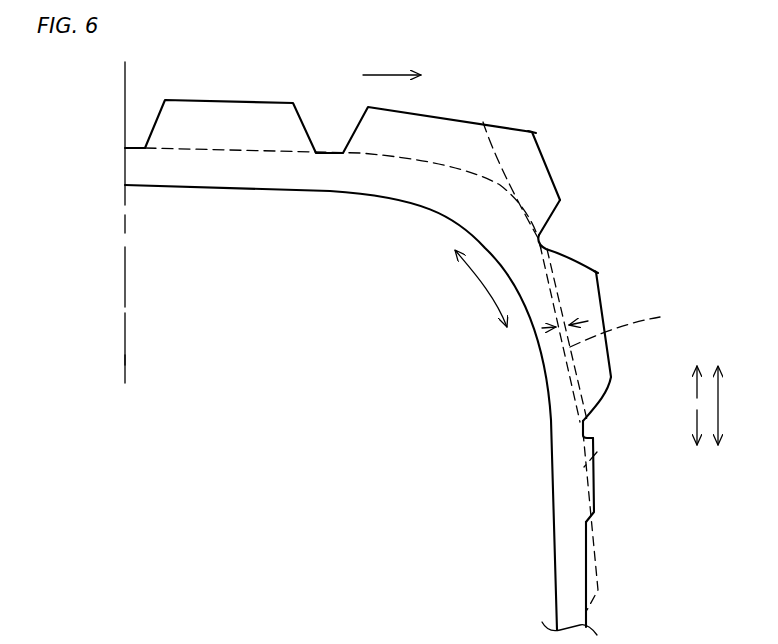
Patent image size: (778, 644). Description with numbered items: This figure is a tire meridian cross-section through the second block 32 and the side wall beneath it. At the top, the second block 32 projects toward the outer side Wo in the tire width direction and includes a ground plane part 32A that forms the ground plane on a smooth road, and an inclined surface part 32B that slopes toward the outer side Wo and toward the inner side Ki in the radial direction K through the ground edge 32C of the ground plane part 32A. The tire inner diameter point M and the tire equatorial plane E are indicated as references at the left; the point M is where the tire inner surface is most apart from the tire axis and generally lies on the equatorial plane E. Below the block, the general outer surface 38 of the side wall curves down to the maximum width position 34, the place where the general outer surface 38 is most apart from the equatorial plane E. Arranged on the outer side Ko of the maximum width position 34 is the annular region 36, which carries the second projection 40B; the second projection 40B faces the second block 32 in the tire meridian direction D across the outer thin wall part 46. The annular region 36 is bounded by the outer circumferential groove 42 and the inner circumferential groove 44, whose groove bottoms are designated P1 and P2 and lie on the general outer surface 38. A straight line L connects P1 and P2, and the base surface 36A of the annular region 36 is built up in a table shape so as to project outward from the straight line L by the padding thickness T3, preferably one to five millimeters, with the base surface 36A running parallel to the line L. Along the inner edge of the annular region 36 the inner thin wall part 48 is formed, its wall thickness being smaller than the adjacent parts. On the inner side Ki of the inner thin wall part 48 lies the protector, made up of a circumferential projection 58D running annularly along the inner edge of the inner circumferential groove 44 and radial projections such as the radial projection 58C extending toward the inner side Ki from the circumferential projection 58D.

The second block 32 is at (457, 140).
The ground plane part 32A is at (486, 120).
The inclined surface part 32B is at (549, 163).
The ground edge 32C is at (536, 129).
The maximum width position 34 is at (590, 608).
The annular region 36 is at (607, 274).
The base surface 36A is at (637, 324).
The general outer surface 38 is at (588, 561).
The second projection 40B is at (601, 303).
The outer circumferential groove 42 is at (540, 234).
The inner circumferential groove 44 is at (584, 423).
The outer thin wall part 46 is at (564, 221).
The inner thin wall part 48 is at (605, 407).
The radial projection 58C is at (596, 494).
The circumferential projection 58D is at (600, 460).
The tire inner diameter point M is at (124, 187).
The tire equatorial plane E is at (125, 360).
The groove bottom of the outer circumferential groove P1 is at (533, 239).
The groove bottom of the inner circumferential groove P2 is at (579, 423).
The thickness of the padding T3 is at (560, 332).
The straight line L is at (568, 378).
The tire meridian direction D is at (481, 288).
The outer side in the tire width direction Wo is at (392, 60).
The outer side in the radial direction Ko is at (681, 383).
The inner side in the radial direction Ki is at (681, 427).
The radial direction K is at (733, 405).